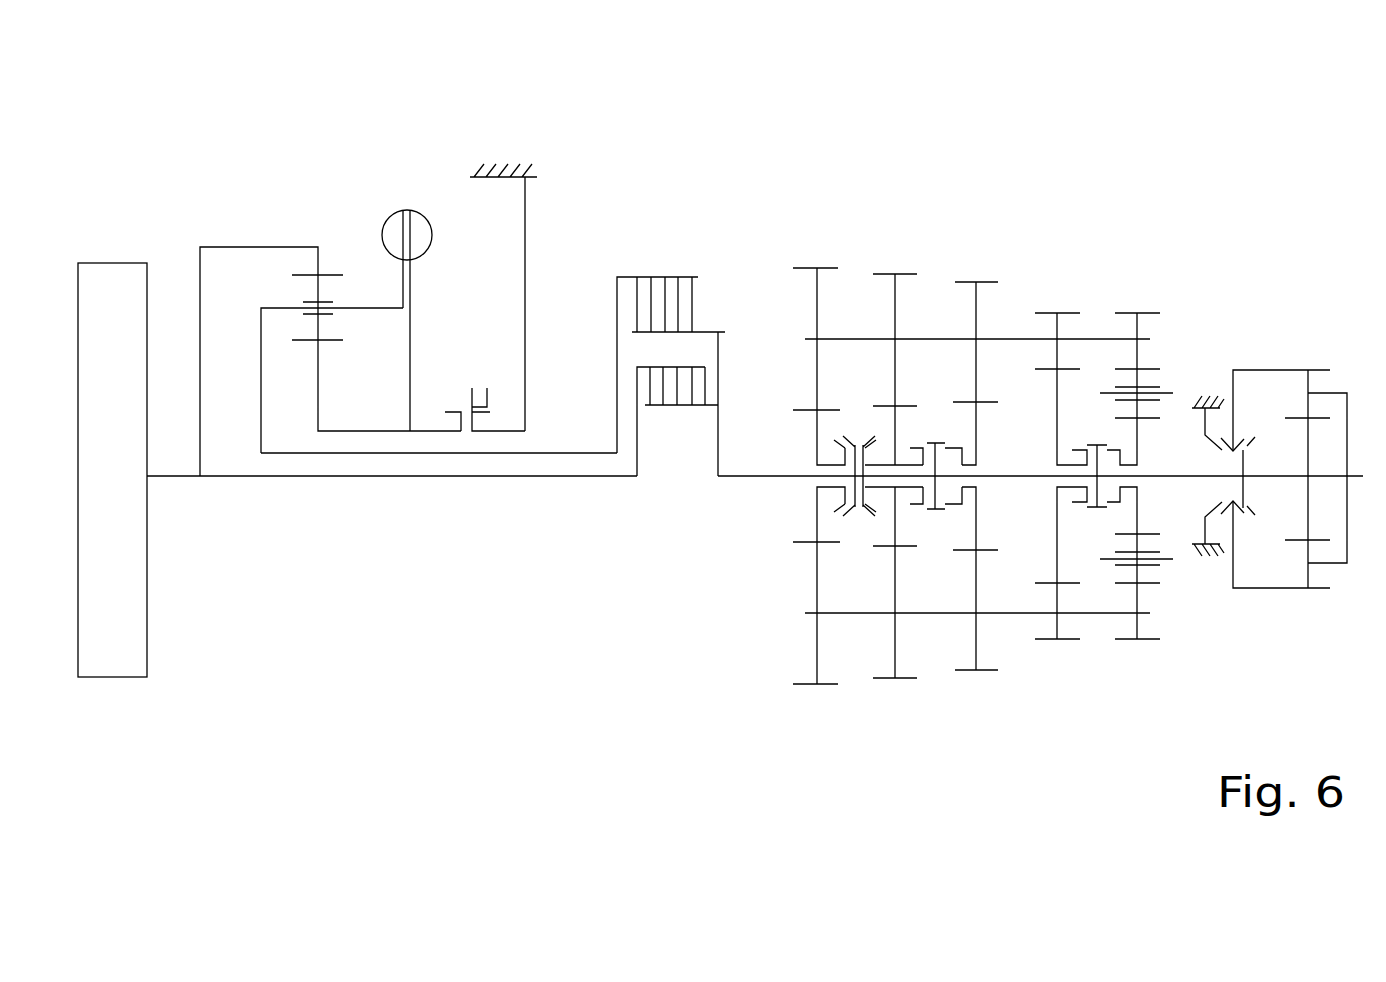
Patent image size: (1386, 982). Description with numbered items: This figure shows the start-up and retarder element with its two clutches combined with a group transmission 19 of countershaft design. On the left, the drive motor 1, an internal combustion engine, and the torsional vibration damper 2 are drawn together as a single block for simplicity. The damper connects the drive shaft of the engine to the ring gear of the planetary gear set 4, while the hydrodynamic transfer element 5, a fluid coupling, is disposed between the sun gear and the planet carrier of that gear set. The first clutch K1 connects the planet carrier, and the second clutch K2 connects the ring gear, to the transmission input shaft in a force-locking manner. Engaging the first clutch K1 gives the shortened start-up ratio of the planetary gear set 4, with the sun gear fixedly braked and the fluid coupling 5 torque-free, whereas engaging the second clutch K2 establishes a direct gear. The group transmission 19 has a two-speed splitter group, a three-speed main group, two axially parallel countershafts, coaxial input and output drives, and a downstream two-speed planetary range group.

The drive motor 1 is at (94, 262).
The torsional vibration damper 2 is at (130, 262).
The planetary gear set 4 is at (317, 247).
The hydrodynamic transfer element 5 is at (403, 205).
The first clutch K1 is at (640, 277).
The second clutch K2 is at (697, 365).
The group transmission 19 is at (1011, 226).